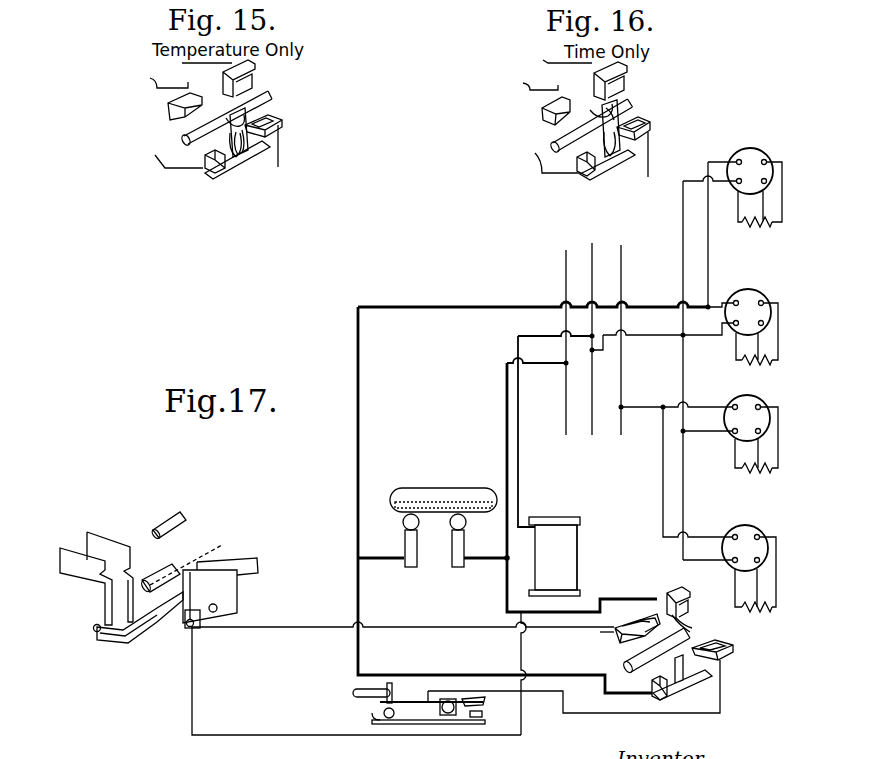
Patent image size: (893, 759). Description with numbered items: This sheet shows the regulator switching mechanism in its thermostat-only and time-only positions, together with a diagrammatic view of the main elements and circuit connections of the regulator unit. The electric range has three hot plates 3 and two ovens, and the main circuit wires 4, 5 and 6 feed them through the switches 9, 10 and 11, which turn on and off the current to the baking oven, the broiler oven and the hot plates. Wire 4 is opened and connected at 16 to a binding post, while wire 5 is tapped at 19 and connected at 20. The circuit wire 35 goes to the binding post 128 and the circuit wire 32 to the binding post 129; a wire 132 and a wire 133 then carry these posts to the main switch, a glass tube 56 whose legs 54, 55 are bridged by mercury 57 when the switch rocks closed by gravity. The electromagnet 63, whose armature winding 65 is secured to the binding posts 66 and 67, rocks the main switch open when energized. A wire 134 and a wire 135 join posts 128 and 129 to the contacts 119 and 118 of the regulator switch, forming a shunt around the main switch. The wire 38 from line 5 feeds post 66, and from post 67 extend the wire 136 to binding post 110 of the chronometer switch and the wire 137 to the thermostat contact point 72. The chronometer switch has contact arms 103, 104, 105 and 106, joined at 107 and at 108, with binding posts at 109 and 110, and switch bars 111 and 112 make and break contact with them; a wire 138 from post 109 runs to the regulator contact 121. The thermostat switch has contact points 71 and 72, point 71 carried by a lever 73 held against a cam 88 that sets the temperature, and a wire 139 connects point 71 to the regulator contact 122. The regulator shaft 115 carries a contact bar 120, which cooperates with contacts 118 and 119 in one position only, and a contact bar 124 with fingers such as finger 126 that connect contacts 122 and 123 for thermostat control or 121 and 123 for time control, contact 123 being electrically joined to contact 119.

In FIG. 17, the hot plates 3 is at (741, 466).
In FIG. 17, the main circuit wire 4 is at (566, 264).
In FIG. 17, the main circuit wire 5 is at (592, 262).
In FIG. 17, the main circuit wire 6 is at (622, 266).
In FIG. 17, the switch handle 9 is at (759, 149).
In FIG. 17, the switch handle 10 is at (771, 301).
In FIG. 17, the switch handle 11 is at (770, 403).
In FIG. 17, the connection point 16 is at (707, 305).
In FIG. 17, the tap 19 is at (593, 352).
In FIG. 17, the connection point 20 is at (591, 336).
In FIG. 17, the circuit wire 32 is at (542, 366).
In FIG. 17, the circuit wire 35 is at (487, 306).
In FIG. 17, the wire 38 is at (529, 336).
In FIG. 17, the leg of glass tube 54 is at (406, 543).
In FIG. 17, the leg of glass tube 55 is at (463, 543).
In FIG. 17, the glass tube 56 is at (467, 497).
In FIG. 17, the mercury 57 is at (404, 505).
In FIG. 17, the electromagnet 63 is at (566, 553).
In FIG. 17, the armature winding 65 is at (578, 538).
In FIG. 17, the binding post 66 is at (521, 525).
In FIG. 17, the binding post 67 is at (427, 725).
In FIG. 17, the contact point 71 is at (468, 703).
In FIG. 17, the contact point 72 is at (475, 716).
In FIG. 17, the lever 73 is at (419, 701).
In FIG. 17, the cam 88 is at (392, 688).
In FIG. 17, the contact arm 103 is at (61, 547).
In FIG. 17, the contact arm 104 is at (107, 538).
In FIG. 17, the contact arm 105 is at (226, 583).
In FIG. 17, the contact arm 106 is at (253, 562).
In FIG. 17, the connection 107 is at (98, 633).
In FIG. 17, the connection 108 is at (138, 606).
In FIG. 17, the binding post 109 is at (127, 616).
In FIG. 17, the binding post 110 is at (189, 632).
In FIG. 17, the switch bar 111 is at (157, 532).
In FIG. 17, the switch bar 112 is at (197, 552).
In FIG. 15, the shaft 115 is at (188, 136).
In FIG. 16, the shaft 115 is at (556, 143).
In FIG. 17, the shaft 115 is at (690, 621).
In FIG. 15, the contact 118 is at (170, 109).
In FIG. 16, the contact 118 is at (545, 113).
In FIG. 17, the contact 118 is at (614, 643).
In FIG. 15, the contact 119 is at (213, 170).
In FIG. 16, the contact 119 is at (587, 175).
In FIG. 17, the contact 119 is at (652, 687).
In FIG. 17, the contact bar 120 is at (643, 620).
In FIG. 15, the contact 121 is at (254, 63).
In FIG. 16, the contact 121 is at (628, 65).
In FIG. 17, the contact 121 is at (680, 592).
In FIG. 15, the contact 122 is at (270, 119).
In FIG. 16, the contact 122 is at (640, 120).
In FIG. 17, the contact 122 is at (720, 640).
In FIG. 15, the contact 123 is at (237, 157).
In FIG. 16, the contact 123 is at (613, 157).
In FIG. 17, the contact 123 is at (680, 674).
In FIG. 15, the contact bar 124 is at (243, 132).
In FIG. 16, the contact bar 124 is at (595, 107).
In FIG. 17, the contact bar 124 is at (684, 601).
In FIG. 16, the contact finger 126 is at (584, 108).
In FIG. 17, the binding post 128 is at (357, 559).
In FIG. 17, the binding post 129 is at (512, 562).
In FIG. 17, the wire 132 is at (380, 560).
In FIG. 17, the wire 133 is at (482, 560).
In FIG. 15, the wire 134 is at (165, 151).
In FIG. 16, the wire 134 is at (540, 156).
In FIG. 17, the wire 134 is at (455, 674).
In FIG. 15, the wire 135 is at (160, 75).
In FIG. 16, the wire 135 is at (524, 79).
In FIG. 17, the wire 135 is at (591, 596).
In FIG. 17, the wire 136 is at (271, 733).
In FIG. 17, the wire 137 is at (428, 724).
In FIG. 15, the wire 138 is at (207, 74).
In FIG. 16, the wire 138 is at (552, 62).
In FIG. 17, the wire 138 is at (272, 631).
In FIG. 15, the wire 139 is at (281, 137).
In FIG. 16, the wire 139 is at (650, 153).
In FIG. 17, the wire 139 is at (581, 712).